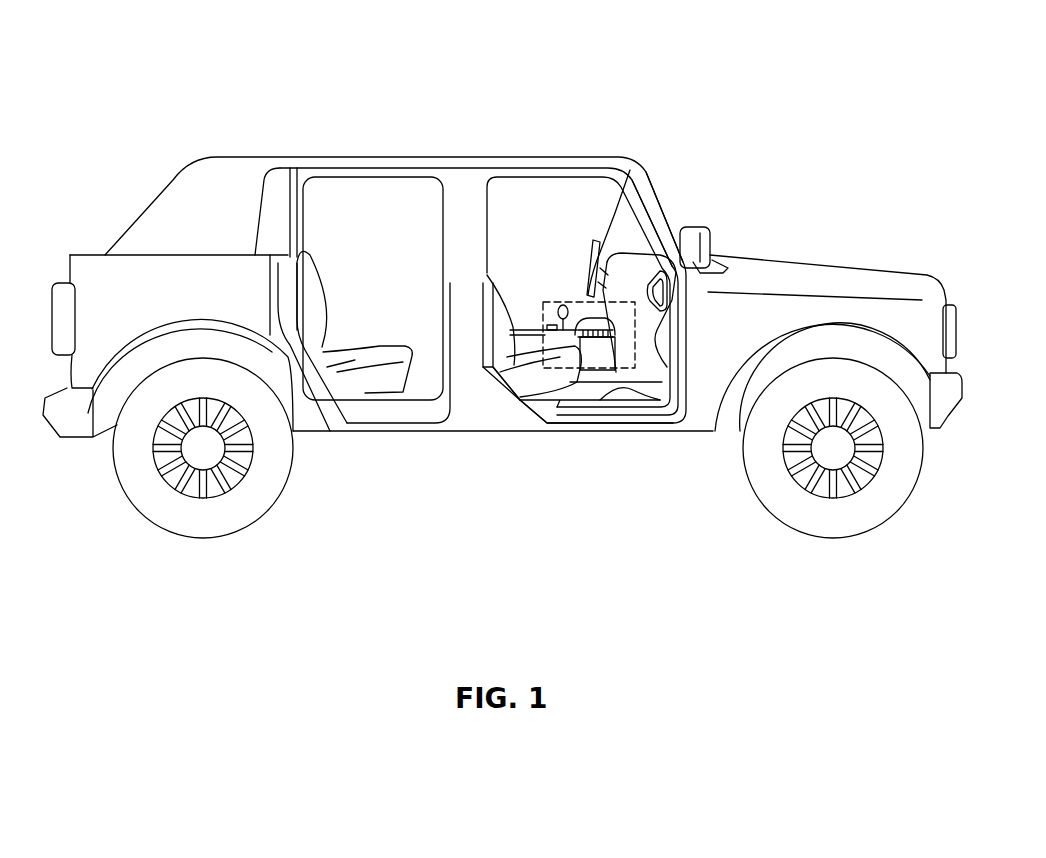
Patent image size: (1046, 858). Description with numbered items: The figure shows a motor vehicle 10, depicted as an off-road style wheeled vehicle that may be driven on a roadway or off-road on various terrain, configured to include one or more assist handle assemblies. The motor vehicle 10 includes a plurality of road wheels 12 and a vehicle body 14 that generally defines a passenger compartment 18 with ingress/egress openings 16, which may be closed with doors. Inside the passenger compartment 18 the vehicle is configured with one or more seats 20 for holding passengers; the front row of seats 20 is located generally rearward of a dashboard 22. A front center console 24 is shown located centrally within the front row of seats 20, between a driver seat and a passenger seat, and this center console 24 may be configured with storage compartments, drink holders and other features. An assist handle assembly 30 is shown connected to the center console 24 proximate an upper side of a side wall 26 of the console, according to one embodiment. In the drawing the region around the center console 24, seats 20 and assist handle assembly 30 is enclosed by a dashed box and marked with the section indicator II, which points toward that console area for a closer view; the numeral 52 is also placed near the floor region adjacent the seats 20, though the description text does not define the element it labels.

The motor vehicle 10 is at (630, 115).
The road wheels 12 is at (140, 483).
The vehicle body 14 is at (484, 405).
The ingress/egress openings 16 is at (498, 187).
The passenger compartment 18 is at (529, 187).
The seats 20 is at (540, 378).
The dashboard 22 is at (631, 170).
The front center console 24 is at (575, 287).
The side wall 26 is at (667, 367).
The assist handle assembly 30 is at (588, 293).
The floor mat 52 is at (633, 390).
The section view indicator II is at (622, 300).